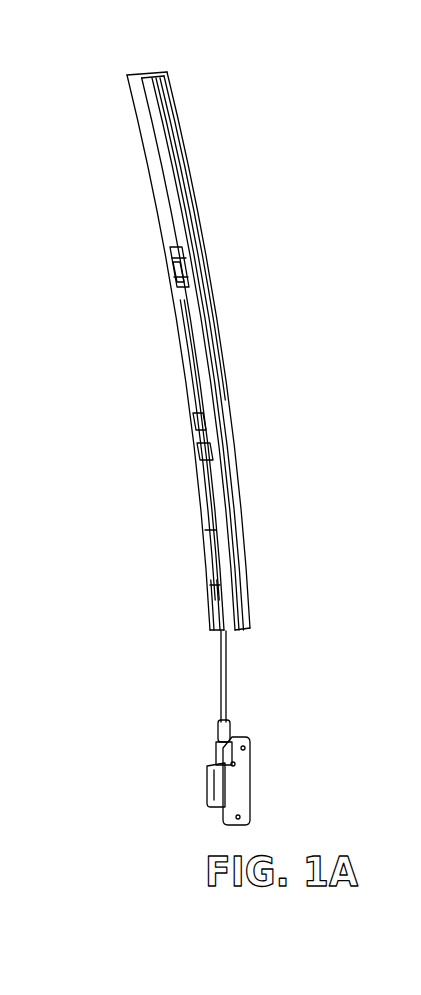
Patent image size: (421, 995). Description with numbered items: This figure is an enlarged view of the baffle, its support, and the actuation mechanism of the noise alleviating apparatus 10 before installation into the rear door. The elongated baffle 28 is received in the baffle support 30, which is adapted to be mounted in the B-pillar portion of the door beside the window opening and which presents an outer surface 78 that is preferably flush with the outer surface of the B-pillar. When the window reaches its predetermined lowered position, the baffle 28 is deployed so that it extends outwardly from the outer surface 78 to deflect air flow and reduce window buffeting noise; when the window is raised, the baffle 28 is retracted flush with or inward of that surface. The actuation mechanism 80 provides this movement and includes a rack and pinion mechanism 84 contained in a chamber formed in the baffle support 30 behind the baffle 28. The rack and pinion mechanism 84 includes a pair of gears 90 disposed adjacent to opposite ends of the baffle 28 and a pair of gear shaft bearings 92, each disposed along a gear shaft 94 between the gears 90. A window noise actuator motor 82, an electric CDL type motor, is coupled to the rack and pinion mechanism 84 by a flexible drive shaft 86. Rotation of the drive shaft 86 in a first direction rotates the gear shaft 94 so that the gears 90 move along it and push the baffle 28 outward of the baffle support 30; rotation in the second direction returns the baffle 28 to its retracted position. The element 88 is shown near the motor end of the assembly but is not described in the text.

The noise alleviating apparatus 10 is at (123, 128).
The baffle 28 is at (166, 96).
The baffle support 30 is at (158, 178).
The outer surface 78 is at (218, 590).
The actuation mechanism 80 is at (315, 835).
The window noise actuator motor 82 is at (230, 738).
The rack and pinion mechanism 84 is at (182, 360).
The flexible drive shaft 86 is at (224, 654).
The connector plate 88 is at (238, 790).
The gears 90 is at (175, 257).
The gear shaft bearings 92 is at (190, 297).
The gear shaft 94 is at (174, 279).